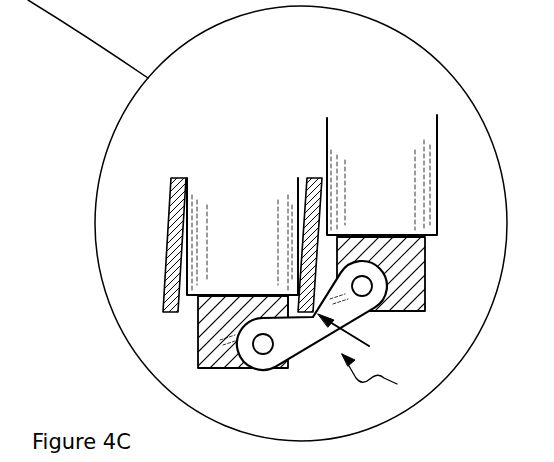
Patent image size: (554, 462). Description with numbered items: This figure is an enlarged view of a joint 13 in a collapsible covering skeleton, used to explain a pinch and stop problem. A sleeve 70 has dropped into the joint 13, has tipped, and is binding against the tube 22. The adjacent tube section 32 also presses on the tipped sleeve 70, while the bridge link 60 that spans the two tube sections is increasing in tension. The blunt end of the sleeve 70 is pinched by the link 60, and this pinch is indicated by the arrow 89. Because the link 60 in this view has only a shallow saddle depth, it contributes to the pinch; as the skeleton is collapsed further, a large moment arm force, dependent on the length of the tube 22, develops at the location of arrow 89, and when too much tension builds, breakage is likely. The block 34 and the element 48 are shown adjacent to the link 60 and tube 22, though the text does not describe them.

The joint 13 is at (422, 392).
The tube 22 is at (253, 248).
The tube section 32 is at (381, 197).
The mounting block 34 is at (414, 263).
The stop member 48 is at (293, 305).
The link 60 is at (305, 344).
The sleeve 70 is at (167, 212).
The arrow 89 is at (357, 326).